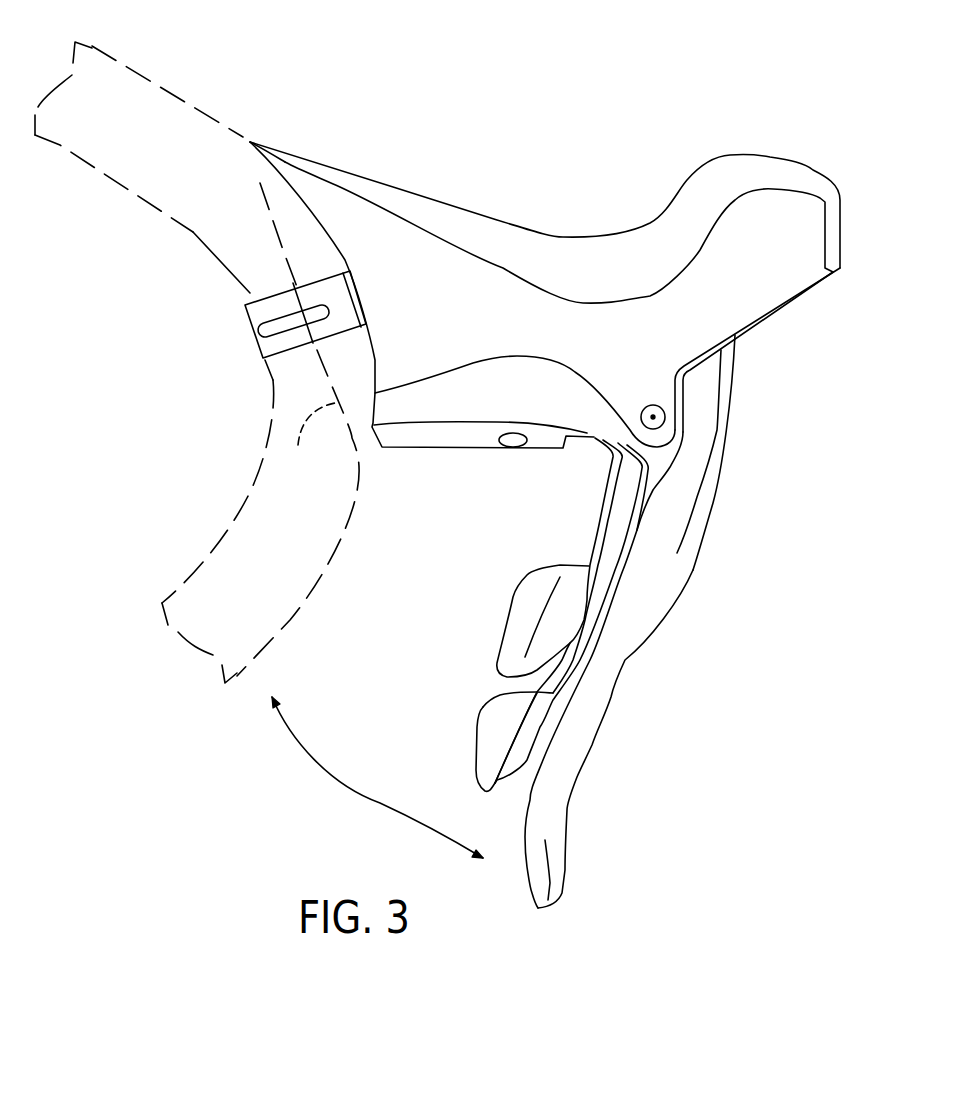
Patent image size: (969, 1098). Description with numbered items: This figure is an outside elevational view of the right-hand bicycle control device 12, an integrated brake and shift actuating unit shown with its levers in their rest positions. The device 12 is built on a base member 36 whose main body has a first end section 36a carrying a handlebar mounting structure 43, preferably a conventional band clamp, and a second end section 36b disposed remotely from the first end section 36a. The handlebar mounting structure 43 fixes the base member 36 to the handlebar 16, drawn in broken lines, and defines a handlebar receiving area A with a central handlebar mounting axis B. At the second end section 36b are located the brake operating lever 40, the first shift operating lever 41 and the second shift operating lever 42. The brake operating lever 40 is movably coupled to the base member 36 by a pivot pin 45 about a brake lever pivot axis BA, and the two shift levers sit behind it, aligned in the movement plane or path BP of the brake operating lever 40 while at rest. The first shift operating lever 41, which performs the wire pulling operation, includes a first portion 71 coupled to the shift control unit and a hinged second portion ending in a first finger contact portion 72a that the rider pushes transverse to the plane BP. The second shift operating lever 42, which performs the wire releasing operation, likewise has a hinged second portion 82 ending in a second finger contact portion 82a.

The bicycle control device 12 is at (745, 127).
The handlebar 16 is at (152, 77).
The base member 36 is at (498, 220).
The first end section 36a is at (358, 226).
The second end section 36b is at (755, 277).
The brake operating lever 40 is at (620, 687).
The first shift operating lever 41 is at (598, 626).
The second shift operating lever 42 is at (599, 549).
The handlebar mounting structure 43 is at (243, 319).
The pivot pin 45 is at (659, 425).
The first portion 71 is at (616, 523).
The first finger contact portion 72a is at (482, 735).
The second portion 82 is at (603, 488).
The second finger contact portion 82a is at (511, 621).
The handlebar receiving area A is at (262, 283).
The central handlebar mounting axis B is at (312, 438).
The brake lever pivot axis BA is at (658, 417).
The brake operating plane BP is at (330, 767).